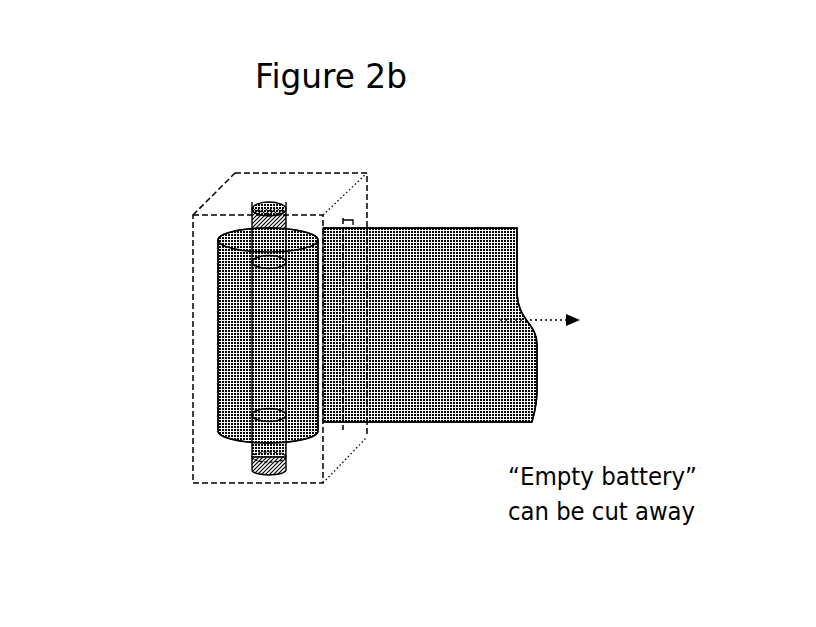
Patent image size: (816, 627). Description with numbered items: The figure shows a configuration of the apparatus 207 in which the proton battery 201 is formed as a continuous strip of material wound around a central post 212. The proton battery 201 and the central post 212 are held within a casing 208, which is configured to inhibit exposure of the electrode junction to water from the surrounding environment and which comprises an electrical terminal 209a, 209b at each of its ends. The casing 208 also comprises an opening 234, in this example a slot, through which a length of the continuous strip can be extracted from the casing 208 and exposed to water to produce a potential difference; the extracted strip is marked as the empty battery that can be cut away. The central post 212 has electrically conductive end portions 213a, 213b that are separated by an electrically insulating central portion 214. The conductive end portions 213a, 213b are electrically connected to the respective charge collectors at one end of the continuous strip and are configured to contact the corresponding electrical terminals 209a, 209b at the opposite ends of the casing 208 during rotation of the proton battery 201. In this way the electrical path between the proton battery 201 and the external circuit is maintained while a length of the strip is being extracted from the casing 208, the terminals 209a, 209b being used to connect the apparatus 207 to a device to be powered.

The proton battery 201 is at (415, 248).
The apparatus 207 is at (142, 190).
The casing 208 is at (235, 198).
The electrical terminal 209a is at (267, 201).
The electrical terminal 209b is at (260, 475).
The central post 212 is at (238, 368).
The electrically conductive end portion 213a is at (280, 242).
The electrically conductive end portion 213b is at (272, 435).
The electrically insulating central portion 214 is at (270, 306).
The opening 234 is at (343, 424).